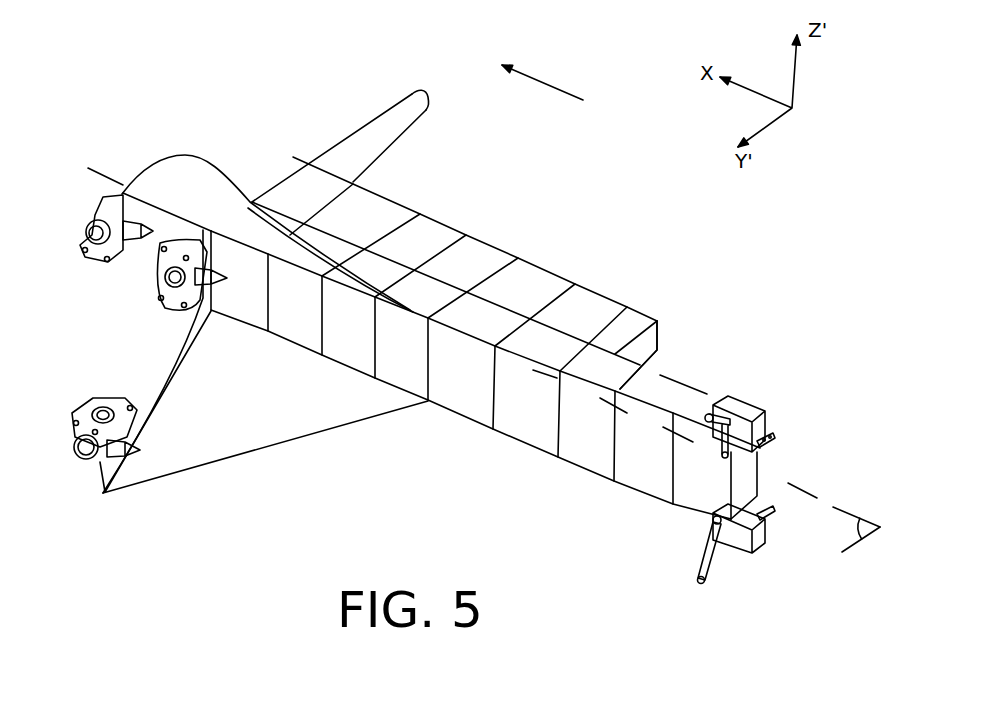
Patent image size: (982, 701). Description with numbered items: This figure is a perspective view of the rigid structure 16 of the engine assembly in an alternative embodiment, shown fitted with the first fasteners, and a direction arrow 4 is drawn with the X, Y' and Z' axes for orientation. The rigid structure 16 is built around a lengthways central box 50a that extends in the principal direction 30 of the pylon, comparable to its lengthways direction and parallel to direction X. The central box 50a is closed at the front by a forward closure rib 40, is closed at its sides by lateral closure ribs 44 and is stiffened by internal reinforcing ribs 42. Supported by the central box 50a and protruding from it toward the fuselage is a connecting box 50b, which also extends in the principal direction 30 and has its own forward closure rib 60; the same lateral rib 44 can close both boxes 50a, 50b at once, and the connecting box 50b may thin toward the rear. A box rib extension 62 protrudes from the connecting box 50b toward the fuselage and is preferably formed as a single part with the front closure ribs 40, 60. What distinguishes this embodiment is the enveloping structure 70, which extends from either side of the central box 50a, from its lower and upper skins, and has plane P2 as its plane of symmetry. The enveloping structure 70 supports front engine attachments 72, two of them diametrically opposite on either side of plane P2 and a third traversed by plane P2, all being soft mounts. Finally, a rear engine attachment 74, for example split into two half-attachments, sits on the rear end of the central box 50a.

The flight direction arrow 4 is at (550, 82).
The rigid structure 16 is at (615, 187).
The principal direction 30 is at (792, 486).
The plane P2 is at (861, 528).
The forward closure rib 40 is at (252, 202).
The internal reinforcing ribs 42 is at (690, 400).
The lateral closure ribs 44 is at (580, 273).
The lengthways central box 50a is at (461, 421).
The connecting box 50b is at (505, 232).
The forward closure rib 60 is at (293, 170).
The box rib extension 62 is at (375, 116).
The enveloping structure 70 is at (226, 457).
The front engine attachments 72 is at (102, 397).
The rear engine attachment 74 is at (750, 406).